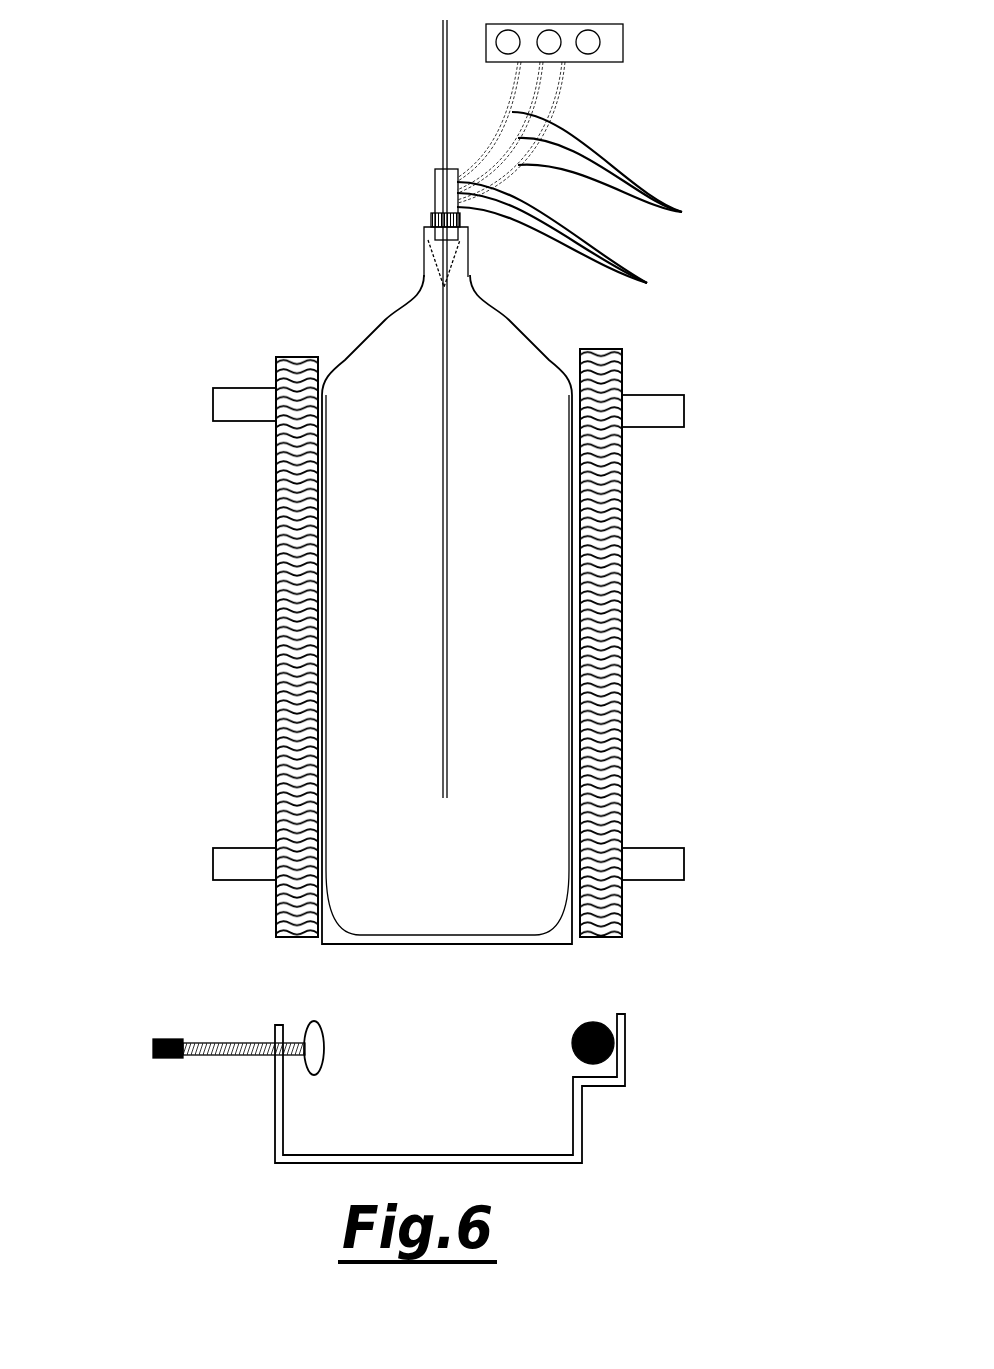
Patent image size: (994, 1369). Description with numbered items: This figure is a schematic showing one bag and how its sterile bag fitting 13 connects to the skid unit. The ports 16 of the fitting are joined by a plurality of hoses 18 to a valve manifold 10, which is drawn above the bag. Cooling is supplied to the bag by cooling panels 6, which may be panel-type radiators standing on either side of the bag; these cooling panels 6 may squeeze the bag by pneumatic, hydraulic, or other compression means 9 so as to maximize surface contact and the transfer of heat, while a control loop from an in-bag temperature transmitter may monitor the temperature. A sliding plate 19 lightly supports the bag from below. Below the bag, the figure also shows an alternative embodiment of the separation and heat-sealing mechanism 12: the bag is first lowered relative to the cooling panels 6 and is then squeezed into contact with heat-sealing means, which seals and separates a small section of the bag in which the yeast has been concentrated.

The cooling panels 6 is at (275, 649).
The compression means 9 is at (243, 407).
The valve manifold 10 is at (627, 35).
The separation and heat-sealing mechanism 12 is at (225, 1111).
The bag fitting 13 is at (433, 197).
The ports 16 is at (578, 245).
The hoses 18 is at (631, 172).
The sliding plate 19 is at (463, 942).